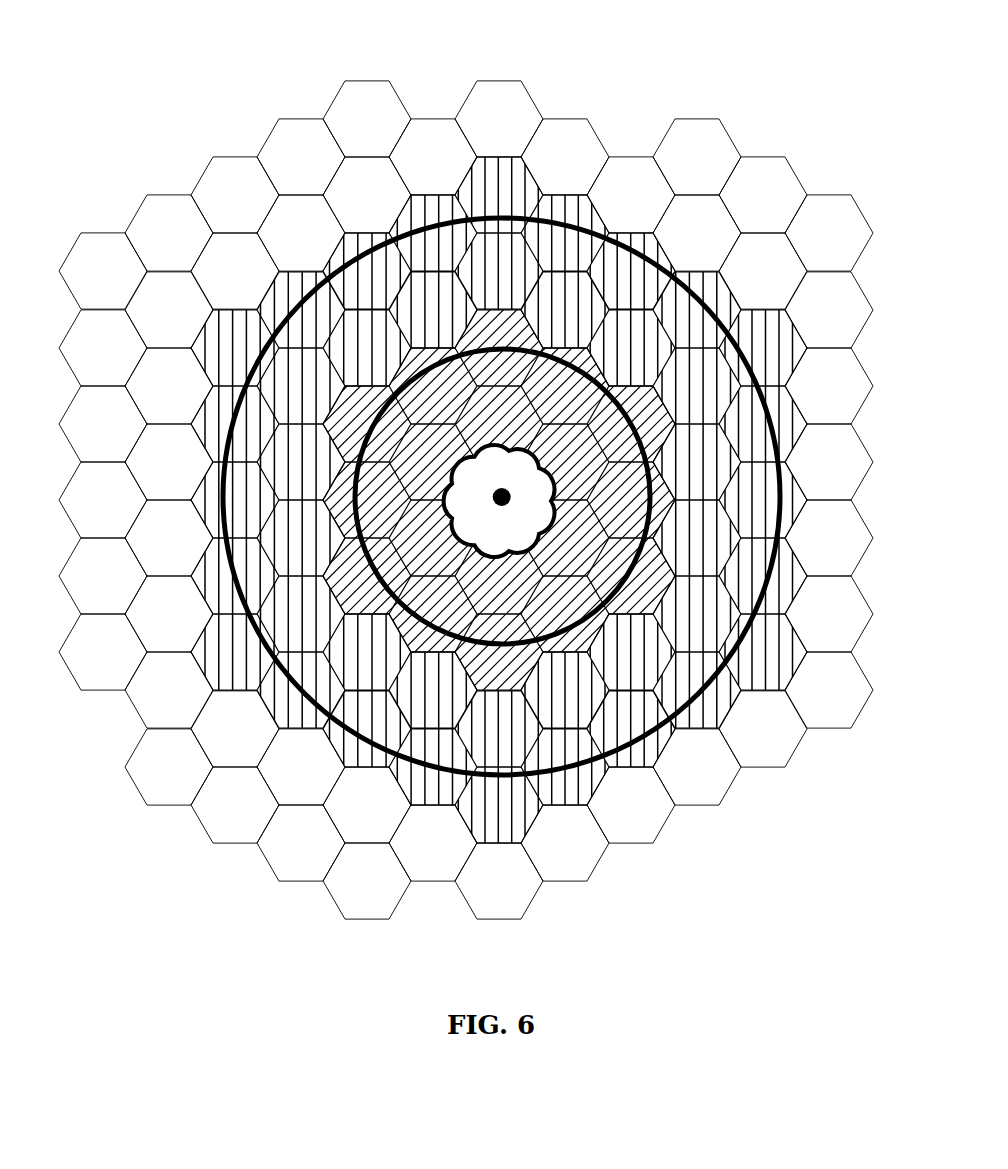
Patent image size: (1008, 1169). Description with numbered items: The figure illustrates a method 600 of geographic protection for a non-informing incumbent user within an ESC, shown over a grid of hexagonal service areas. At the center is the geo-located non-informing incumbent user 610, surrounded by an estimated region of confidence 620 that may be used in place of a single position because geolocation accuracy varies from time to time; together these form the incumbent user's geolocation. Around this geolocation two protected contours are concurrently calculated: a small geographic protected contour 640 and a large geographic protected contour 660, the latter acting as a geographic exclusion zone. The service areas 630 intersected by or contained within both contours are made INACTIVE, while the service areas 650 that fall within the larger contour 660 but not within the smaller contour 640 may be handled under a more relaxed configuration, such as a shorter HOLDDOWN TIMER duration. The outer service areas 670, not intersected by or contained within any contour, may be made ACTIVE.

The method 600 is at (504, 462).
The non-informing incumbent user 610 is at (524, 514).
The estimated region of confidence 620 is at (553, 450).
The ESC service area 630 is at (511, 404).
The small geographic protected contour 640 is at (575, 353).
The ESC service area 650 is at (576, 301).
The geographic protected contour 660 is at (647, 244).
The ESC service area 670 is at (641, 187).